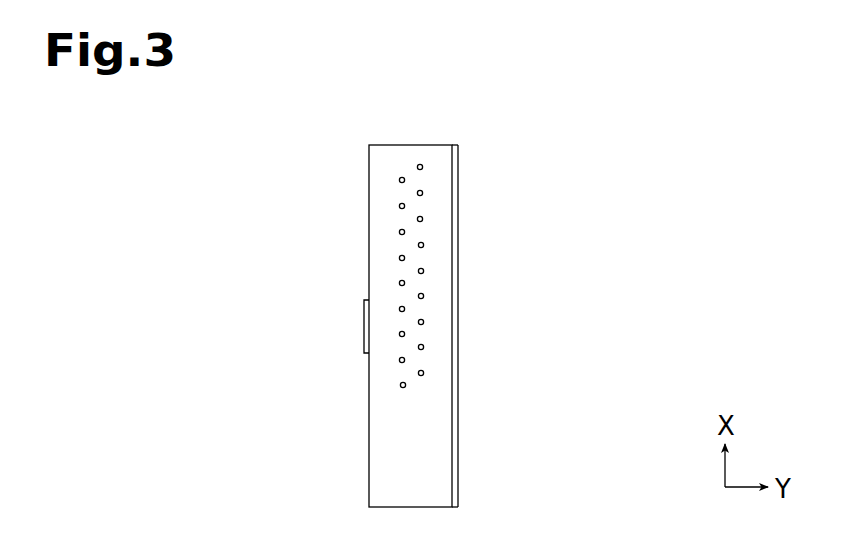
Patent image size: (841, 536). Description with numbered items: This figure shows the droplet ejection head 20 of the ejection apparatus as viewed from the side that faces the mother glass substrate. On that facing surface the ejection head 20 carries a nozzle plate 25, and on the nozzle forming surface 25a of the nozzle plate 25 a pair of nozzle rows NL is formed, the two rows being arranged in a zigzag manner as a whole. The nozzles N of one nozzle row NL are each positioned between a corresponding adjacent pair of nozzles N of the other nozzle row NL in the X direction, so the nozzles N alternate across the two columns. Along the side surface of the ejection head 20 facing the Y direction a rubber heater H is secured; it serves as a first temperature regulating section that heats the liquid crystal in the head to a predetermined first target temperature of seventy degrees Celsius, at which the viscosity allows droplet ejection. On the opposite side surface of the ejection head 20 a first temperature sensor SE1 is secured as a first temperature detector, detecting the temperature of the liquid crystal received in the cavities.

The ejection head 20 is at (436, 326).
The nozzle plate 25 is at (407, 326).
The nozzle forming surface 25a is at (381, 247).
The nozzles N is at (423, 219).
The nozzle rows NL is at (421, 378).
The first temperature sensor SE1 is at (364, 322).
The rubber heater H is at (456, 452).